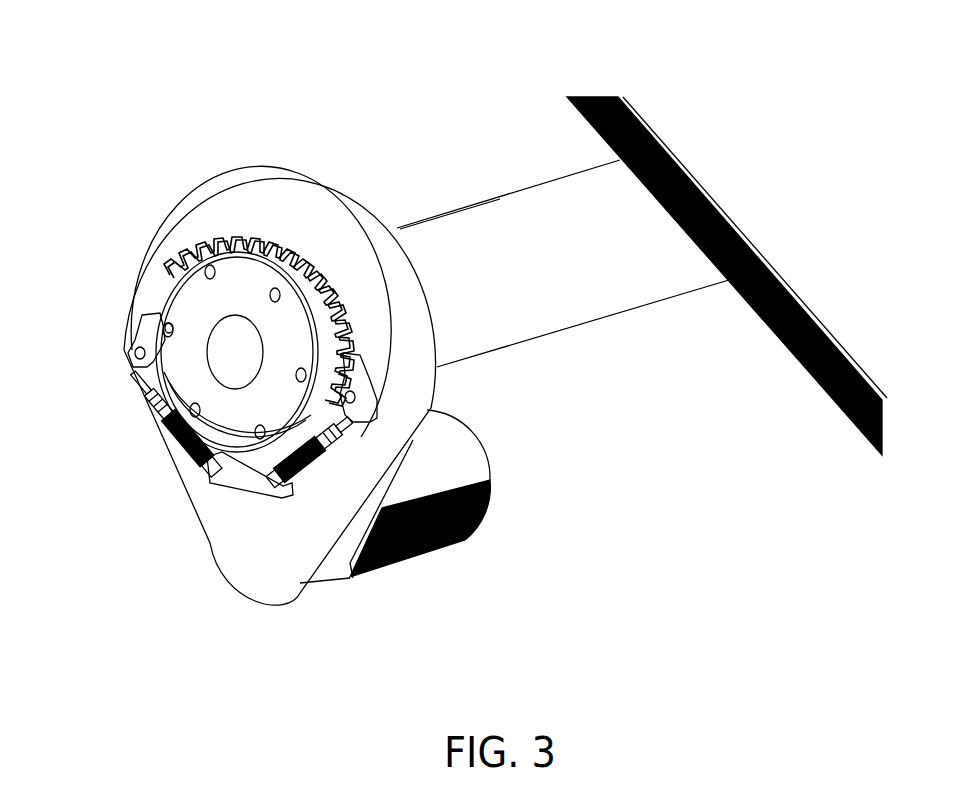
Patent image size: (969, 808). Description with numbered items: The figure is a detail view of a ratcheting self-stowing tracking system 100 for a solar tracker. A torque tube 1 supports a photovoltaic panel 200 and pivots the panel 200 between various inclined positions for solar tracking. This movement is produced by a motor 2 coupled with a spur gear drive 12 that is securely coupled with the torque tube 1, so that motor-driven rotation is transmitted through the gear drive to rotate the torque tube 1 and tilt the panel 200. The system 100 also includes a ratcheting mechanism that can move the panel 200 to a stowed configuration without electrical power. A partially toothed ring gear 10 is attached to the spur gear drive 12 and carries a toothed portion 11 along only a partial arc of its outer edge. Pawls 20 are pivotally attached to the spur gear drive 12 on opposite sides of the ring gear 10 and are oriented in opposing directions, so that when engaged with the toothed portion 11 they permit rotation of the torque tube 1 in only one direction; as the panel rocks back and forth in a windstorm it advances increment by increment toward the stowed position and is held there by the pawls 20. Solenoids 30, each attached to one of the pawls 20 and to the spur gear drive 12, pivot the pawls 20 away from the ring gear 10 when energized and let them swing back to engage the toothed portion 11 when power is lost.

The ratcheting self-stowing tracking system 100 is at (160, 110).
The torque tube 1 is at (498, 262).
The motor 2 is at (492, 478).
The partially toothed ring gear 10 is at (241, 310).
The toothed portion 11 is at (237, 237).
The spur gear drive 12 is at (352, 287).
The pawls 20 is at (357, 412).
The solenoids 30 is at (335, 415).
The photovoltaic panel 200 is at (818, 382).